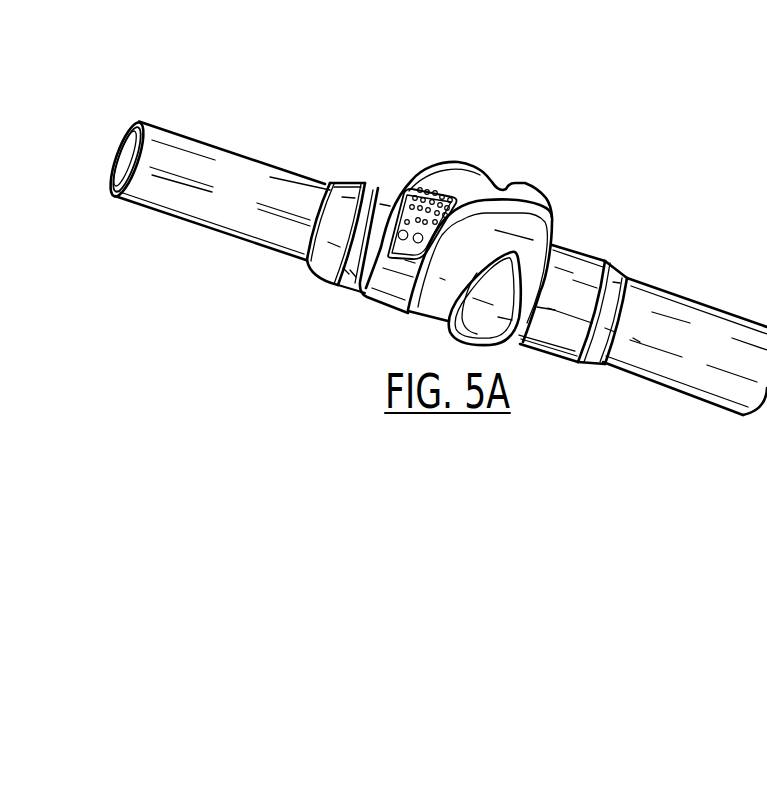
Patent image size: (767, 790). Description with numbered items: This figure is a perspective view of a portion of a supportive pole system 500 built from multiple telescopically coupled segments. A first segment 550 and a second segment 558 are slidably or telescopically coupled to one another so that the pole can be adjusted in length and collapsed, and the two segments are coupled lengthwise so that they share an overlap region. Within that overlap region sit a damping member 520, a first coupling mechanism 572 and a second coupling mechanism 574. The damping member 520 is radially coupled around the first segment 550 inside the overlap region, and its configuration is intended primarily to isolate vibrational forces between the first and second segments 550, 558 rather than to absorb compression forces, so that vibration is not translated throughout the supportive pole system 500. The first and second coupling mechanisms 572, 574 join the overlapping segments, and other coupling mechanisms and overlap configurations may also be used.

The supportive pole system 500 is at (371, 131).
The first segment 550 is at (267, 223).
The damping member 520 is at (320, 270).
The first coupling mechanism 572 is at (458, 181).
The second coupling mechanism 574 is at (536, 248).
The second segment 558 is at (725, 393).